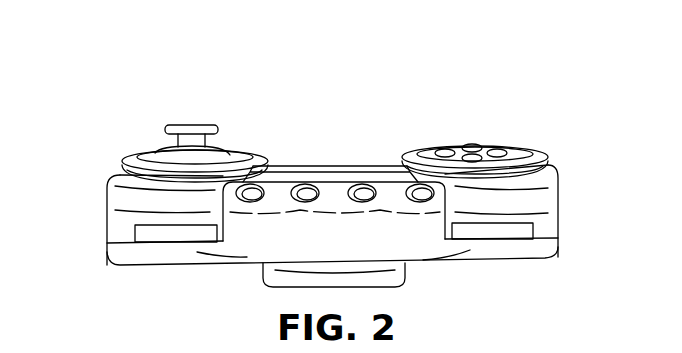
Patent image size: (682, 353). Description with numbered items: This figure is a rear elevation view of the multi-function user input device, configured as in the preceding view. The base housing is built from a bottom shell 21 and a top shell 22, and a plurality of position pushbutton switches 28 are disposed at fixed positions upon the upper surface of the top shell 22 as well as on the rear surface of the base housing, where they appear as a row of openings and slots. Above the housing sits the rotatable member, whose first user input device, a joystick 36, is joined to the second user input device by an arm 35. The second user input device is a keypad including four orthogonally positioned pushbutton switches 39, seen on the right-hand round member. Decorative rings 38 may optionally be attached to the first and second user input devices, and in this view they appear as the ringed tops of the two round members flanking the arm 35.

The bottom shell 21 is at (548, 248).
The top shell 22 is at (552, 195).
The position pushbutton switches 28 is at (310, 186).
The arm 35 is at (286, 165).
The joystick 36 is at (213, 128).
The decorative rings 38 is at (143, 158).
The pushbutton switches 39 is at (447, 148).